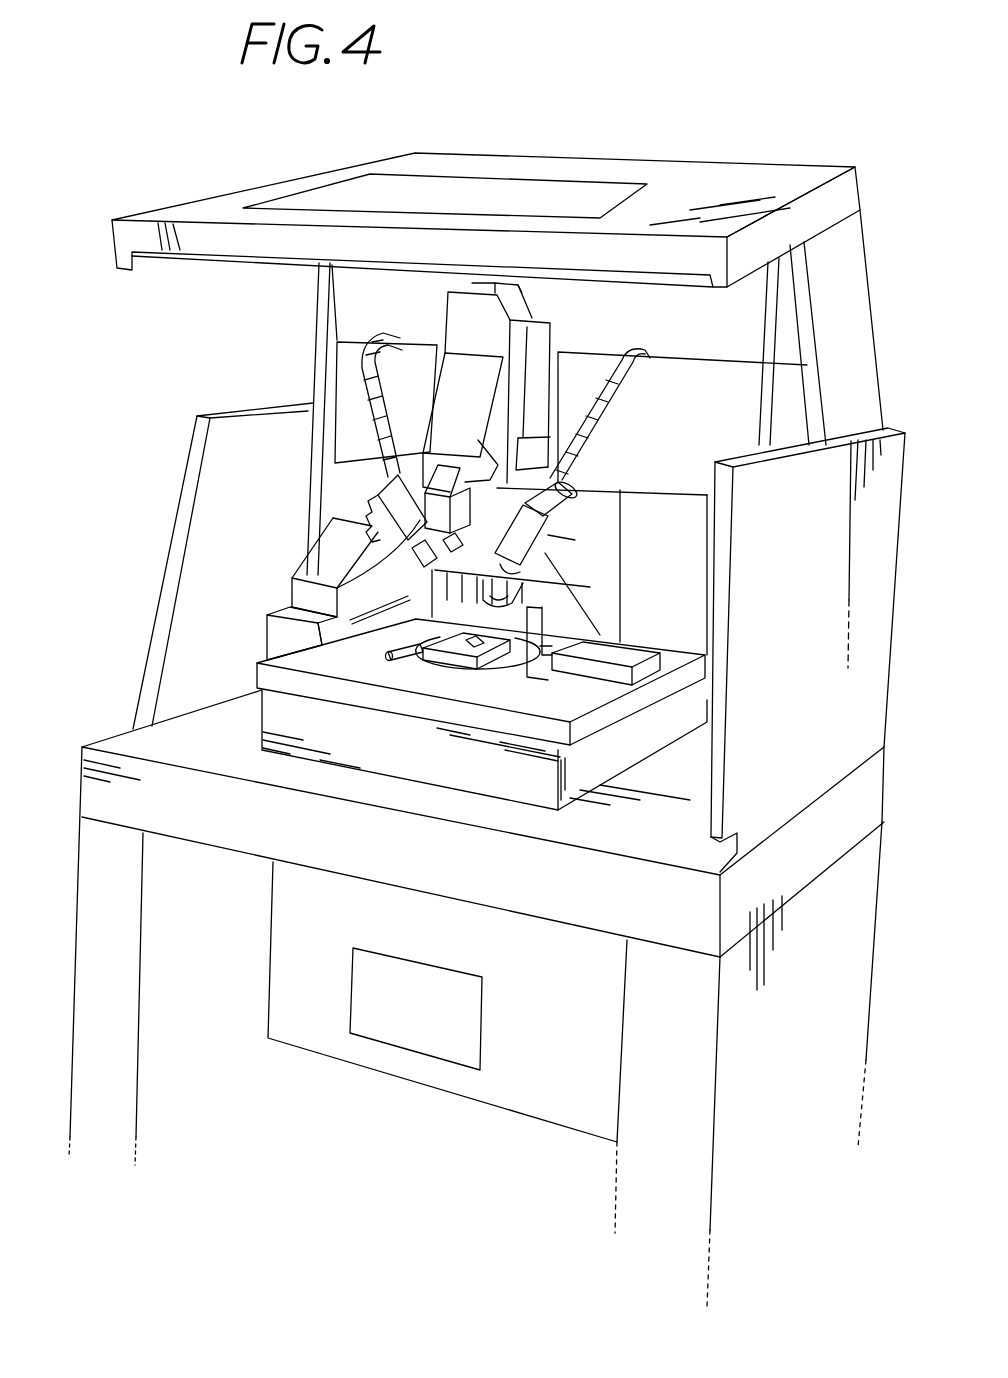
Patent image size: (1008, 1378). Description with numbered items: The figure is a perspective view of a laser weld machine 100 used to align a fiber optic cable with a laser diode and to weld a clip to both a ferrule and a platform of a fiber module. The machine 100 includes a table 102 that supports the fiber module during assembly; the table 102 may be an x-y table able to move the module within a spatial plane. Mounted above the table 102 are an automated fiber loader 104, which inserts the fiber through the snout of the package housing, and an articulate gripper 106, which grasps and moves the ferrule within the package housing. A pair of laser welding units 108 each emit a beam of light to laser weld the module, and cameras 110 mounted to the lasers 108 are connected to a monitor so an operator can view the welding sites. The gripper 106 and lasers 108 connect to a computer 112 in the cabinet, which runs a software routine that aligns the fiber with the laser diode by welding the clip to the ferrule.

The laser weld machine 100 is at (770, 145).
The table 102 is at (368, 674).
The automated fiber loader 104 is at (633, 648).
The articulate gripper 106 is at (497, 600).
The laser welding units 108 is at (398, 517).
The cameras 110 is at (337, 590).
The computer 112 is at (418, 1040).